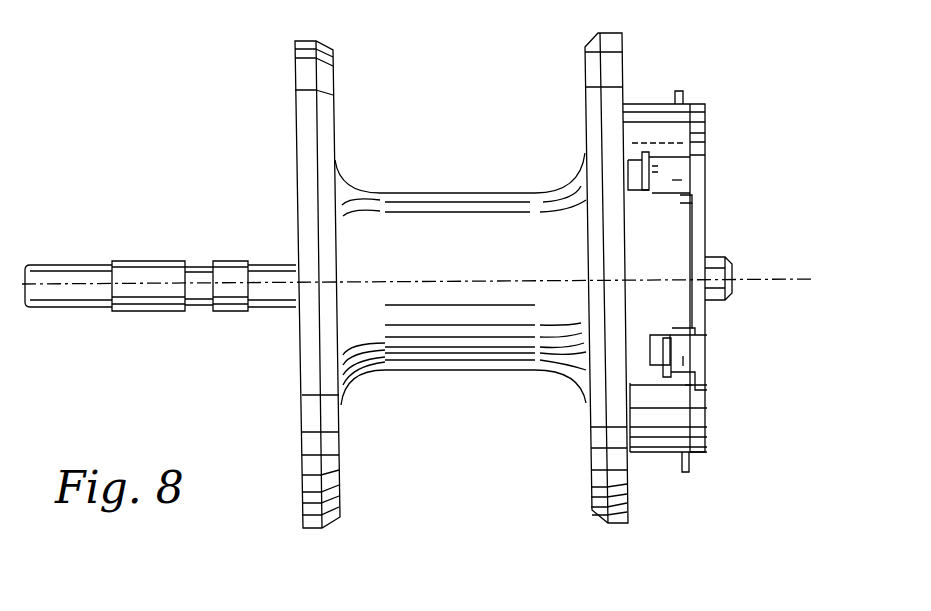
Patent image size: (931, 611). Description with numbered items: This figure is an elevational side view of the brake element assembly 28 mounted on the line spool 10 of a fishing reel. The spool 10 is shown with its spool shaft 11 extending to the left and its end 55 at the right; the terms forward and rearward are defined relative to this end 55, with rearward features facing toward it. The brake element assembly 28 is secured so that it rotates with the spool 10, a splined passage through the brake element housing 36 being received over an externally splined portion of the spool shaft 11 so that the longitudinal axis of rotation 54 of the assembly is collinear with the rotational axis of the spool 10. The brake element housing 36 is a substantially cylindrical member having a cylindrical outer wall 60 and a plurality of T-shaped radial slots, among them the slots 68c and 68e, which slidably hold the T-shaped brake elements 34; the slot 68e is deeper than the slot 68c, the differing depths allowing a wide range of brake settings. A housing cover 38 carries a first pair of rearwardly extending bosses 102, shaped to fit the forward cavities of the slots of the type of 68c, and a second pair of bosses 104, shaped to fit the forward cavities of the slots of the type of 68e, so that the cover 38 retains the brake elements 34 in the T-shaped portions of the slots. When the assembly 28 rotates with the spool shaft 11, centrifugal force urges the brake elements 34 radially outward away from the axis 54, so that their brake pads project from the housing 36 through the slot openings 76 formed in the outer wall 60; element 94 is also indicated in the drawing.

The line spool 10 is at (333, 90).
The spool shaft 11 is at (157, 259).
The brake element assembly 28 is at (723, 93).
The brake elements 34 is at (678, 90).
The brake element housing 36 is at (665, 218).
The housing cover 38 is at (696, 312).
The longitudinal axis of rotation 54 is at (808, 286).
The end of line spool 55 is at (629, 490).
The cylindrical outer wall 60 is at (635, 217).
The T-shaped radial slot 68c is at (650, 345).
The T-shaped radial slot 68e is at (632, 162).
The slot openings 76 is at (643, 173).
The member 94 is at (683, 360).
The rearwardly extending bosses 102 is at (688, 388).
The rearwardly extending bosses 104 is at (673, 180).